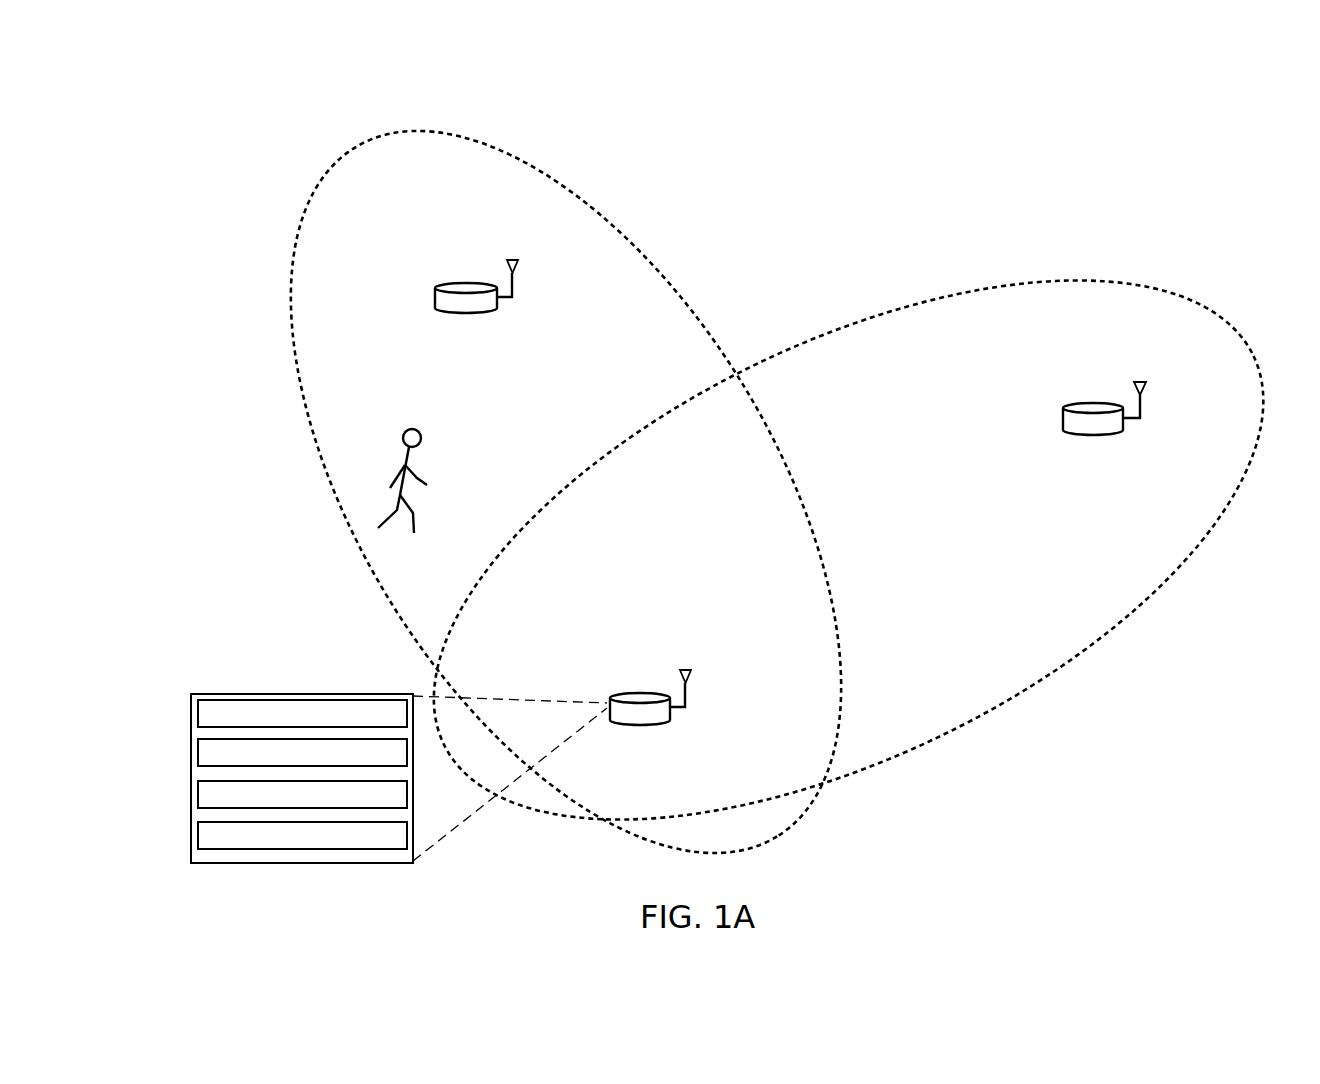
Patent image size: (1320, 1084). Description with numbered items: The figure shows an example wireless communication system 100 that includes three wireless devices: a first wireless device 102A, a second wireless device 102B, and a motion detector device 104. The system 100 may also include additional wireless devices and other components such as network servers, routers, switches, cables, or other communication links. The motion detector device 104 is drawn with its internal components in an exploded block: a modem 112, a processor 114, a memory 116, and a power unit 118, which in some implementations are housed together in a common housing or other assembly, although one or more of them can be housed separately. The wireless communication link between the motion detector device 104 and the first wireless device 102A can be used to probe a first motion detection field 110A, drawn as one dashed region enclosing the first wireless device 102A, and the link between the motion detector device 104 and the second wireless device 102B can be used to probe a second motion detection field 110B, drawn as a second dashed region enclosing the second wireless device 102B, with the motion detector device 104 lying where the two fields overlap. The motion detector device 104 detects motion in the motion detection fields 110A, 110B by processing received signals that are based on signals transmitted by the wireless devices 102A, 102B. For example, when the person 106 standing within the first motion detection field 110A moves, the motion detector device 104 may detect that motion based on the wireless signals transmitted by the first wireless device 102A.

The wireless communication system 100 is at (256, 177).
The first wireless device 102A is at (440, 283).
The second wireless device 102B is at (1070, 405).
The motion detector device 104 is at (610, 695).
The person 106 is at (402, 465).
The first motion detection field 110A is at (292, 348).
The second motion detection field 110B is at (942, 296).
The modem 112 is at (197, 836).
The processor 114 is at (197, 794).
The memory 116 is at (197, 752).
The power unit 118 is at (197, 712).